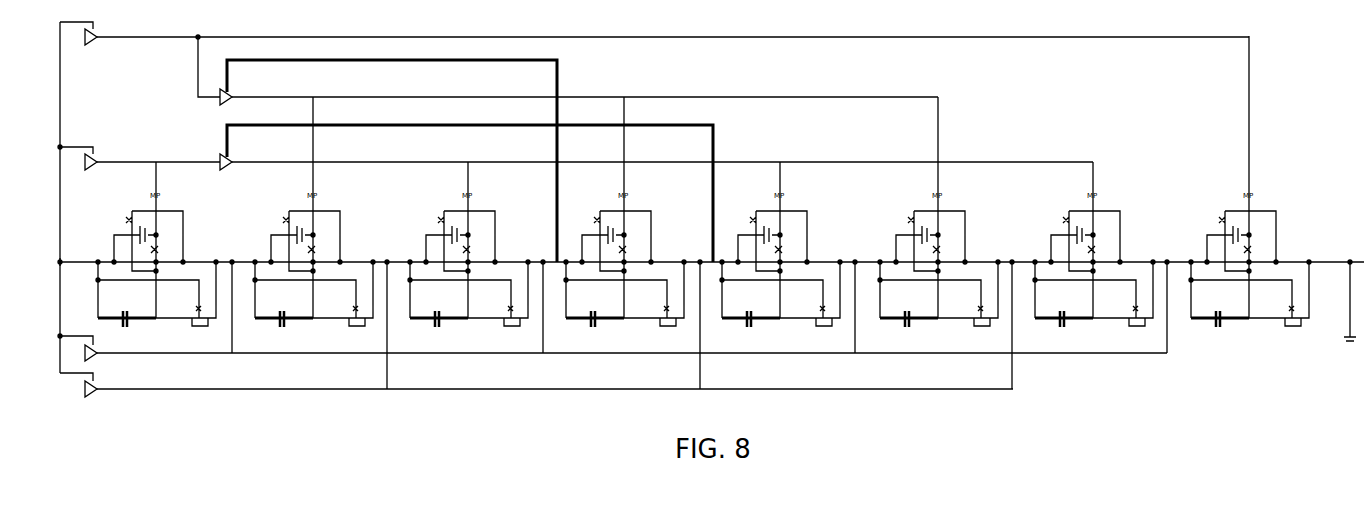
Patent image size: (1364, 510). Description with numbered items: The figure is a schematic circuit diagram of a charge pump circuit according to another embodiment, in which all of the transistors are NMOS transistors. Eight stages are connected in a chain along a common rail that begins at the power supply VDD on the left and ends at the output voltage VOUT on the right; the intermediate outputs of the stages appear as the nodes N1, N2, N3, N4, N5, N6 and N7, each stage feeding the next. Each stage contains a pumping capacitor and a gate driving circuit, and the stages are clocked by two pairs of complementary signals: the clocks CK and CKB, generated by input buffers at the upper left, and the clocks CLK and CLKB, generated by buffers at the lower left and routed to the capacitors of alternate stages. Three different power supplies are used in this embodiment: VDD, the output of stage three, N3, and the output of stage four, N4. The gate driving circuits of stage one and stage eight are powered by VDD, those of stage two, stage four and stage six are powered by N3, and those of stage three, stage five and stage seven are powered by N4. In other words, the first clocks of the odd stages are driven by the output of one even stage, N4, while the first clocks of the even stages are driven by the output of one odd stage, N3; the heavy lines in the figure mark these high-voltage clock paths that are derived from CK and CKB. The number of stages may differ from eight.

The clock signal CK is at (673, 62).
The clock signal CKB is at (158, 156).
The clock signal CLK is at (632, 360).
The clock signal CLKB is at (555, 396).
The power supply VDD is at (76, 255).
The output of stage 1 N1 is at (234, 298).
The output of stage 2 N2 is at (389, 316).
The output of stage 3 N3 is at (545, 298).
The output of stage 4 N4 is at (702, 316).
The output of stage 5 N5 is at (857, 298).
The output of stage 6 N6 is at (1014, 316).
The output of stage 7 N7 is at (1169, 298).
The output voltage VOUT is at (1344, 292).